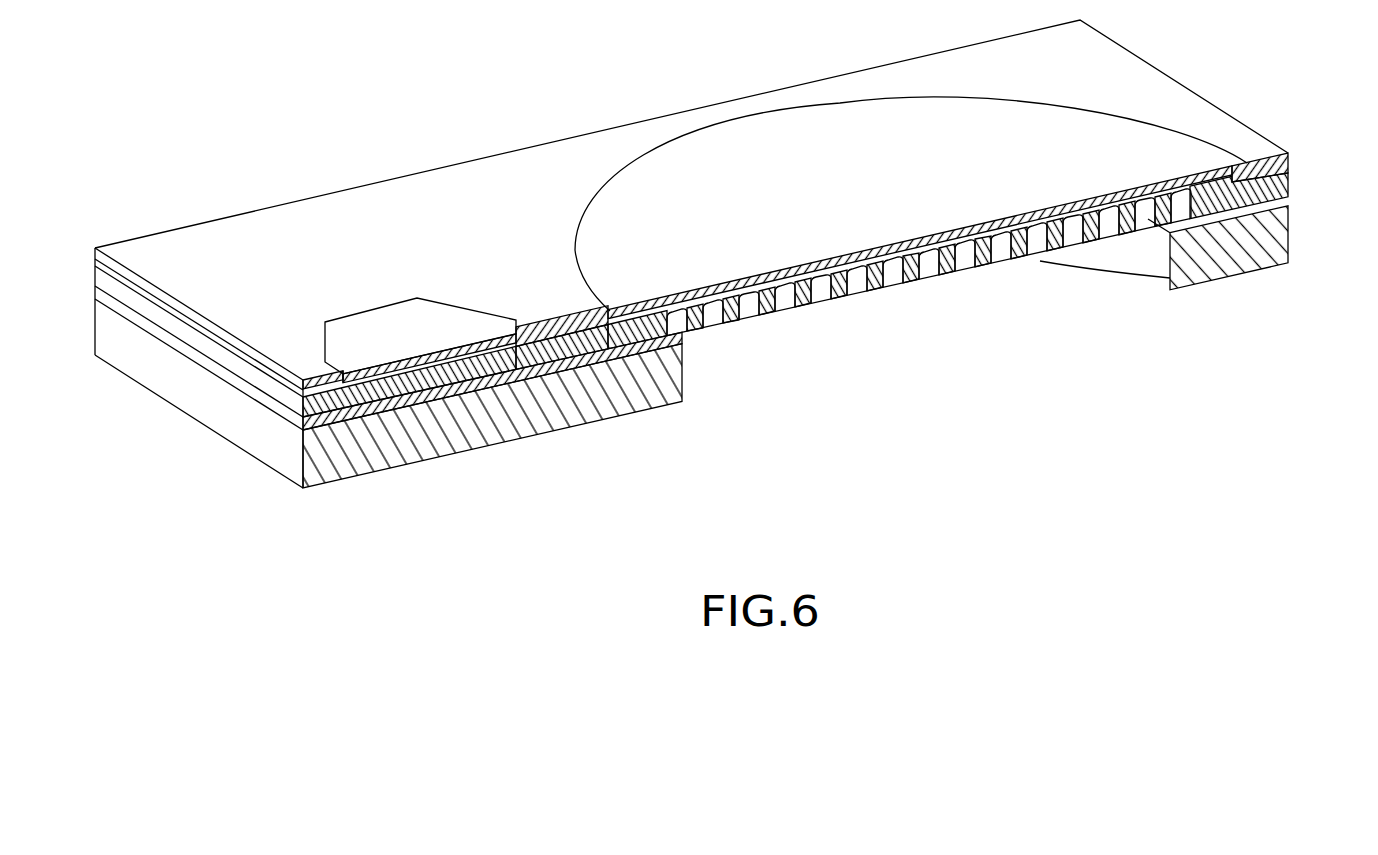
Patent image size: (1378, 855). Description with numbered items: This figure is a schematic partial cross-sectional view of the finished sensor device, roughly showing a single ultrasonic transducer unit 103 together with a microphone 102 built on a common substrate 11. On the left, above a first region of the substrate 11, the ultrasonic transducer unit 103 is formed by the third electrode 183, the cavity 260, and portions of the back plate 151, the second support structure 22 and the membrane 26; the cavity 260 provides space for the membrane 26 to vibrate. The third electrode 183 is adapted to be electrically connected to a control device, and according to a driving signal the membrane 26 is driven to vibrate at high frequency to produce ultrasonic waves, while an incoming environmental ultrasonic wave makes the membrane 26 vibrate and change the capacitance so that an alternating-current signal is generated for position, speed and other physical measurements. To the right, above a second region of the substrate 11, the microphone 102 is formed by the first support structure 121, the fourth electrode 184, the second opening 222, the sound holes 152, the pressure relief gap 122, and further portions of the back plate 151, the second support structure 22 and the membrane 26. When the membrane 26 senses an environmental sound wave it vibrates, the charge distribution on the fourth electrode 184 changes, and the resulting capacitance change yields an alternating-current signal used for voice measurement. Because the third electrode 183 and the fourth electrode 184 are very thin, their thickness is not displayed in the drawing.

The substrate 11 is at (192, 397).
The second support structure 22 is at (1273, 172).
The membrane 26 is at (158, 288).
The microphone 102 is at (628, 148).
The ultrasonic transducer unit 103 is at (347, 290).
The first support structure 121 is at (503, 380).
The pressure relief gap 122 is at (1257, 210).
The back plate 151 is at (276, 393).
The sound holes 152 is at (890, 283).
The third electrode 183 is at (430, 318).
The fourth electrode 184 is at (985, 125).
The second opening 222 is at (645, 323).
The cavity 260 is at (383, 387).